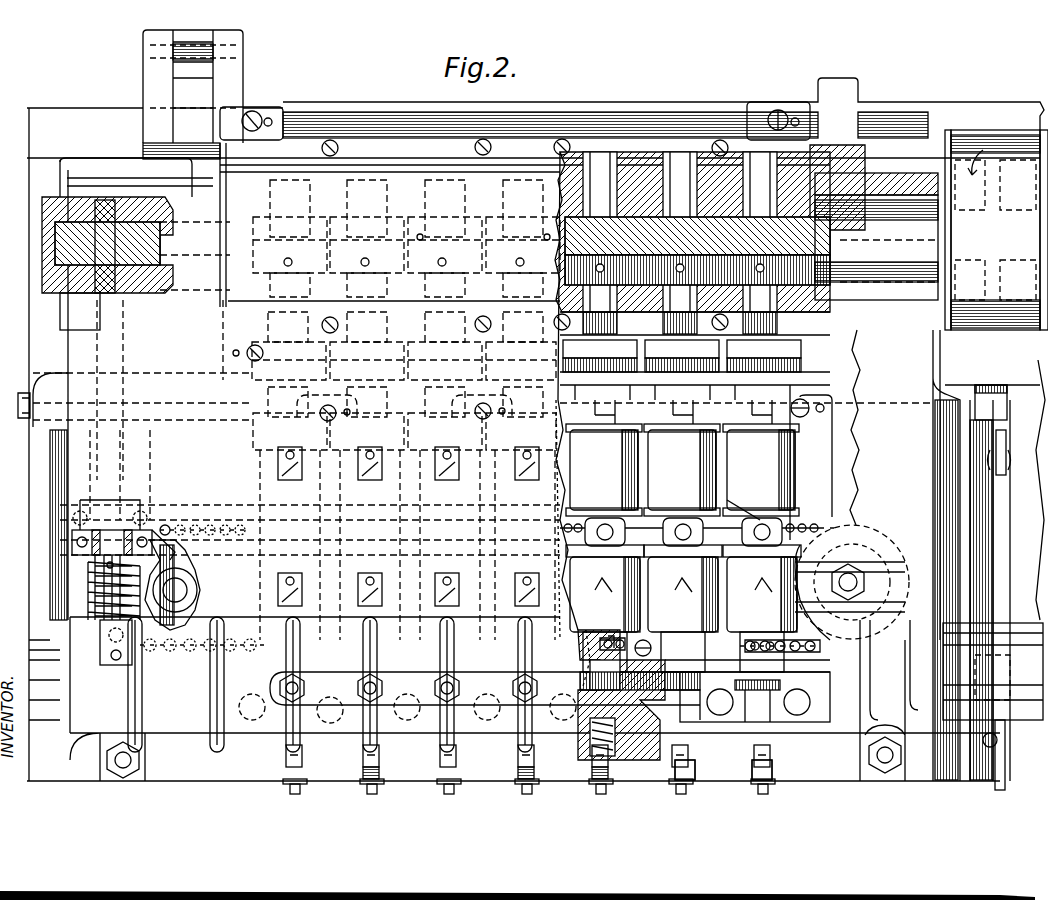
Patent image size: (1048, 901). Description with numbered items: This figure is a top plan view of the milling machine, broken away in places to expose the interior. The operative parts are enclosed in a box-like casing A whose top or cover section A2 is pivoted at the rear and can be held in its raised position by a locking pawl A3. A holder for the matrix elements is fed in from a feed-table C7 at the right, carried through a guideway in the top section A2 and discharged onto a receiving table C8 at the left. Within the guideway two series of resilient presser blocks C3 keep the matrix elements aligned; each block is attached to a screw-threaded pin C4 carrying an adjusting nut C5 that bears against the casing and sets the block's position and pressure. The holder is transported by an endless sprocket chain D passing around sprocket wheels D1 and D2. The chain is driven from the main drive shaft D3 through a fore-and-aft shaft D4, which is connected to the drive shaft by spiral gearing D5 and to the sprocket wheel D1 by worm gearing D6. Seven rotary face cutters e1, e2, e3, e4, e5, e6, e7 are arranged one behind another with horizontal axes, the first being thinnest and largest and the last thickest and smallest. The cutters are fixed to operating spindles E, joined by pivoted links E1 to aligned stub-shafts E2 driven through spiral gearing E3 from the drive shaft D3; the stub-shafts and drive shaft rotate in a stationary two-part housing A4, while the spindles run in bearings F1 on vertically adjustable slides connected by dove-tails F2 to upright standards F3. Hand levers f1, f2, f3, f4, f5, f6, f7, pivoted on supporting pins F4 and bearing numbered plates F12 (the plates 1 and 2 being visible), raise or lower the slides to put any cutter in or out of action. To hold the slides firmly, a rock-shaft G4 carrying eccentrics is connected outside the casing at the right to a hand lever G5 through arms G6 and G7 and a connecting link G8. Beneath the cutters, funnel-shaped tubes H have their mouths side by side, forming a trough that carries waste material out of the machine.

The casing A is at (323, 112).
The top section A2 is at (481, 476).
The locking pawl A3 is at (205, 66).
The two-part case or housing A4 is at (830, 162).
The resilient presser blocks C3 is at (580, 700).
The screw-threaded pin C4 is at (612, 740).
The adjusting nut C5 is at (590, 768).
The feed-table C7 is at (1000, 636).
The receiving table C8 is at (28, 630).
The endless sprocket chain D is at (836, 522).
The sprocket wheel D1 is at (178, 560).
The sprocket wheel D2 is at (795, 585).
The main drive shaft D3 is at (1032, 222).
The fore-and-aft shaft D4 is at (128, 520).
The spiral gearing D5 is at (160, 208).
The worm gearing D6 is at (90, 582).
The operating spindles E is at (740, 700).
The pivoted links E1 is at (820, 352).
The stub-shafts E2 is at (628, 168).
The spiral gearing E3 is at (556, 275).
The bearings F1 is at (574, 440).
The dove-tails F2 is at (683, 564).
The upright posts or standards F3 is at (832, 470).
The supporting pins F4 is at (743, 498).
The numbered plates or labels F12 is at (772, 768).
The rock-shaft G4 is at (1007, 410).
The hand lever G5 is at (1005, 778).
The arm G6 is at (1000, 742).
The arm G7 is at (1006, 432).
The connecting link G8 is at (1008, 500).
The funnel-shaped tubes or receptacles H is at (755, 697).
The rotary face cutter e1 is at (800, 676).
The rotary face cutter e2 is at (702, 676).
The rotary face cutter e3 is at (640, 692).
The rotary face cutter e4 is at (525, 692).
The rotary face cutter e5 is at (426, 692).
The rotary face cutter e6 is at (349, 694).
The rotary face cutter e7 is at (268, 690).
The hand lever f1 is at (774, 788).
The hand lever f2 is at (691, 788).
The hand lever f3 is at (612, 788).
The hand lever f4 is at (538, 788).
The hand lever f5 is at (460, 788).
The hand lever f6 is at (383, 788).
The hand lever f7 is at (305, 788).
The block 1 is at (762, 770).
The block 2 is at (685, 770).